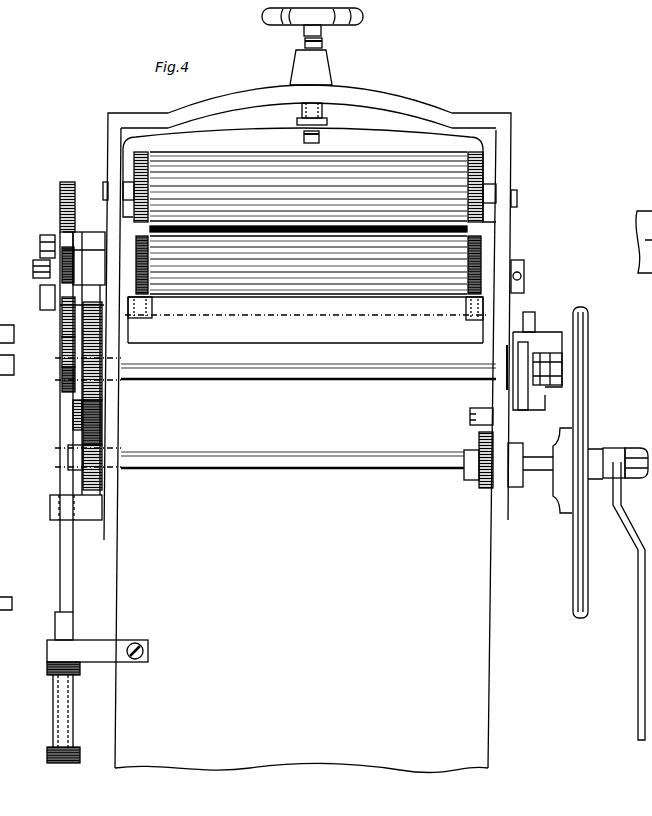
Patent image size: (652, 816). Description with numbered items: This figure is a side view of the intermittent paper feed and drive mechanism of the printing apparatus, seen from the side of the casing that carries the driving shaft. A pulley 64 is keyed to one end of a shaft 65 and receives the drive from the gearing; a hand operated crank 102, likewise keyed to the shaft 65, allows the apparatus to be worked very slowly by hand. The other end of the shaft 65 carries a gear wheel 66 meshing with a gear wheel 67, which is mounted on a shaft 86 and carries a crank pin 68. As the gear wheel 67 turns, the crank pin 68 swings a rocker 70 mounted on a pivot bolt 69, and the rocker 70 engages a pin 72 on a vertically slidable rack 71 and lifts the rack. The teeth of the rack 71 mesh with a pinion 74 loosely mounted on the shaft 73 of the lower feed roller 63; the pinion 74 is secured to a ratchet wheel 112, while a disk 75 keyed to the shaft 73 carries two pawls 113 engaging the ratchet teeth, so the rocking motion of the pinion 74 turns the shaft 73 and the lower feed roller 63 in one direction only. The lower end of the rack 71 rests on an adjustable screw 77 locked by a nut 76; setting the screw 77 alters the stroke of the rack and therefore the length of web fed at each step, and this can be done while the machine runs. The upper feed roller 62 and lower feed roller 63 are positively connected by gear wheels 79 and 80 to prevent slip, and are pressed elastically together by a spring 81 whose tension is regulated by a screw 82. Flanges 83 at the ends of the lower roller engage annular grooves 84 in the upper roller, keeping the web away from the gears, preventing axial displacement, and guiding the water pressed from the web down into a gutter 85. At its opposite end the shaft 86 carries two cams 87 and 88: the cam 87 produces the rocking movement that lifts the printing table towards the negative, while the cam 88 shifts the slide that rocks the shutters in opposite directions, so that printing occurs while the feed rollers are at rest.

The upper feed roller 62 is at (296, 145).
The lower feed roller 63 is at (257, 276).
The pulley 64 is at (581, 571).
The shaft 65 is at (276, 456).
The gear wheel 66 is at (83, 479).
The gear wheel 67 is at (102, 419).
The crank pin 68 is at (75, 405).
The pivot bolt 69 is at (63, 331).
The rocker 70 is at (80, 356).
The rack 71 is at (62, 205).
The pin 72 is at (75, 384).
The shaft 73 is at (84, 258).
The pinion 74 is at (74, 283).
The disk 75 is at (43, 252).
The nut 76 is at (47, 668).
The screw 77 is at (67, 720).
The gear wheel 79 is at (135, 320).
The gear wheel 80 is at (138, 192).
The spring 81 is at (332, 128).
The screw 82 is at (321, 44).
The flanges 83 is at (136, 228).
The annular grooves 84 is at (146, 173).
The gutter 85 is at (305, 320).
The shaft 86 is at (292, 377).
The cam 87 is at (527, 405).
The cam 88 is at (553, 387).
The hand operated crank 102 is at (640, 682).
The ratchet wheel 112 is at (45, 275).
The pawls 113 is at (58, 305).